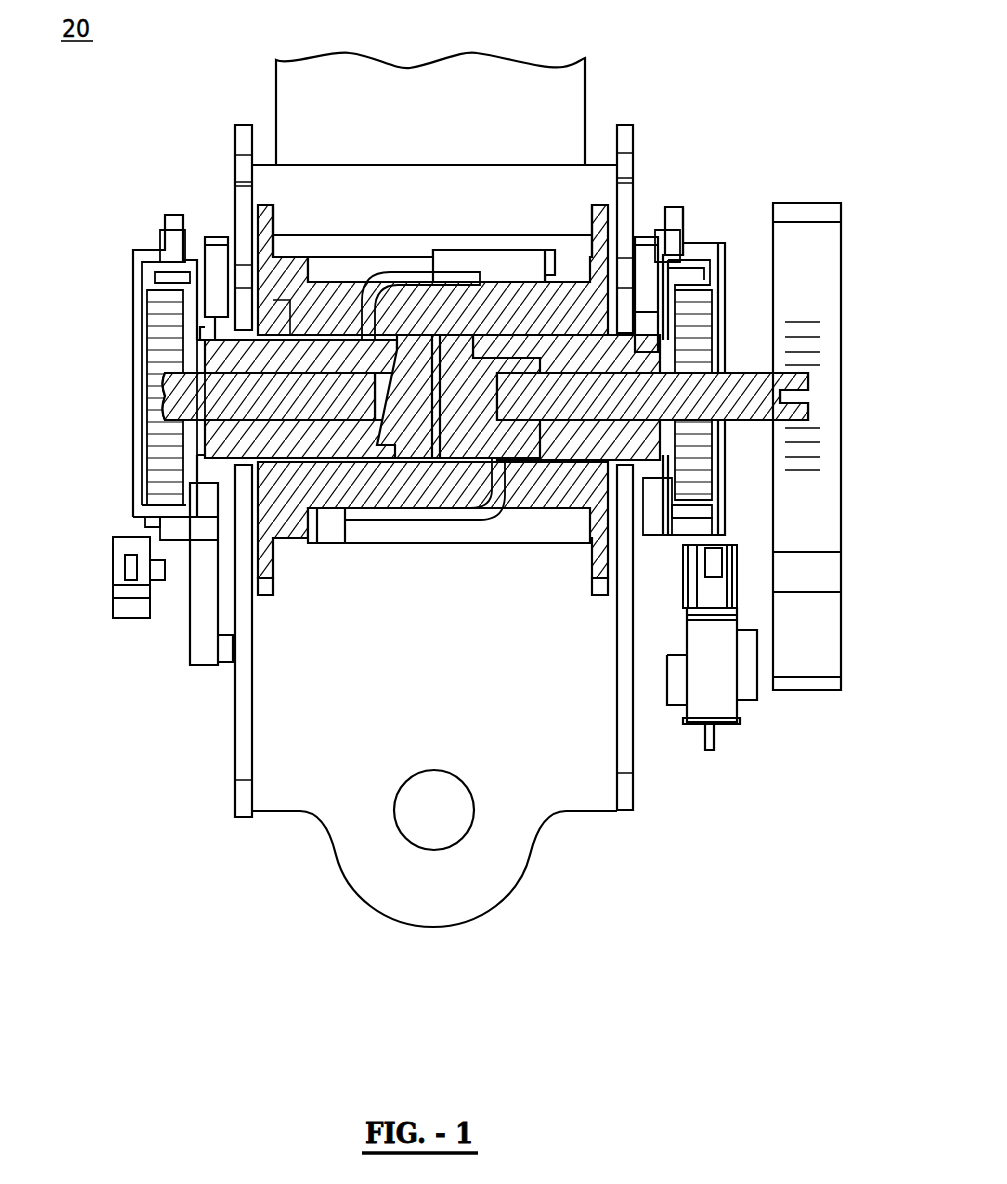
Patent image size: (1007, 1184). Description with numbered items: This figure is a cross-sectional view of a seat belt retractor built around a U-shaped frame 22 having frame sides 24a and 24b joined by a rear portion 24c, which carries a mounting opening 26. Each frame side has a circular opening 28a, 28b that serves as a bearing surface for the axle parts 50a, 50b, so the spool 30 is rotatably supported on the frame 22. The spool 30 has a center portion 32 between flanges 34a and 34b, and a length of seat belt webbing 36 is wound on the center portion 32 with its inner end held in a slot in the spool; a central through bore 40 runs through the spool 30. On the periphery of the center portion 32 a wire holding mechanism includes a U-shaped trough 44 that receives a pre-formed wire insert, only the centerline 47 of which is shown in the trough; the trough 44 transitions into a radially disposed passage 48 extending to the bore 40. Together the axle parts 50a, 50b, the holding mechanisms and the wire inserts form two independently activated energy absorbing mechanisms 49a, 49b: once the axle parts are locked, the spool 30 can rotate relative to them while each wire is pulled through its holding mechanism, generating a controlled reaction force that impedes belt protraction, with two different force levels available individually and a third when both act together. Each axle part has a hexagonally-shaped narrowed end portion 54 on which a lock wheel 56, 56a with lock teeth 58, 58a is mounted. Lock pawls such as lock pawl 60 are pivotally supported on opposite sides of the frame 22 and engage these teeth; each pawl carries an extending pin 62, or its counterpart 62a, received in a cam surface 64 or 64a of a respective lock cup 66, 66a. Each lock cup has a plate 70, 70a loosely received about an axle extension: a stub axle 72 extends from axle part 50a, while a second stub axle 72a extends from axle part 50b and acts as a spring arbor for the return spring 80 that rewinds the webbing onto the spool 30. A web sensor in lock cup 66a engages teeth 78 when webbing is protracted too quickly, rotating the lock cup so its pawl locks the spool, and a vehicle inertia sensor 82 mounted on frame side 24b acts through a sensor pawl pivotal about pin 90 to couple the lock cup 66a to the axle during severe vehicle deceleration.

The U-shaped frame 22 is at (272, 755).
The frame side 24a is at (248, 782).
The frame side 24b is at (628, 752).
The rear portion 24c is at (314, 796).
The mounting opening 26 is at (450, 786).
The circular opening 28a is at (301, 356).
The circular opening 28b is at (566, 354).
The spool 30 is at (370, 270).
The center portion 32 is at (445, 255).
The flange 34a is at (276, 222).
The flange 34b is at (596, 220).
The seat belt webbing 36 is at (303, 76).
The central through bore 40 is at (302, 283).
The U-shaped trough 44 is at (492, 262).
The centerline 47 is at (398, 292).
The radially disposed passage 48 is at (362, 290).
The energy absorbing mechanism 49a is at (168, 408).
The energy absorbing mechanism 49b is at (705, 382).
The axle part 50a is at (301, 439).
The axle part 50b is at (578, 440).
The hexagonally-shaped narrowed end portion 54 is at (178, 460).
The lock wheel 56 is at (217, 208).
The lock wheel 56a is at (643, 240).
The lock teeth 58 is at (212, 260).
The lock teeth 58a is at (652, 255).
The lock pawl 60 is at (192, 625).
The extending pin 62 is at (178, 530).
The extending pin 62a is at (695, 525).
The cam surface 64 is at (152, 514).
The cam surface 64a is at (722, 518).
The lock cup 66 is at (125, 318).
The lock cup 66a is at (748, 208).
The plate 70 is at (145, 362).
The plate 70a is at (727, 265).
The stub axle 72 is at (198, 404).
The second stub axle 72a is at (701, 379).
The teeth 78 is at (700, 295).
The return spring 80 is at (822, 444).
The vehicle sensor 82 is at (748, 705).
The pin 90 is at (162, 560).